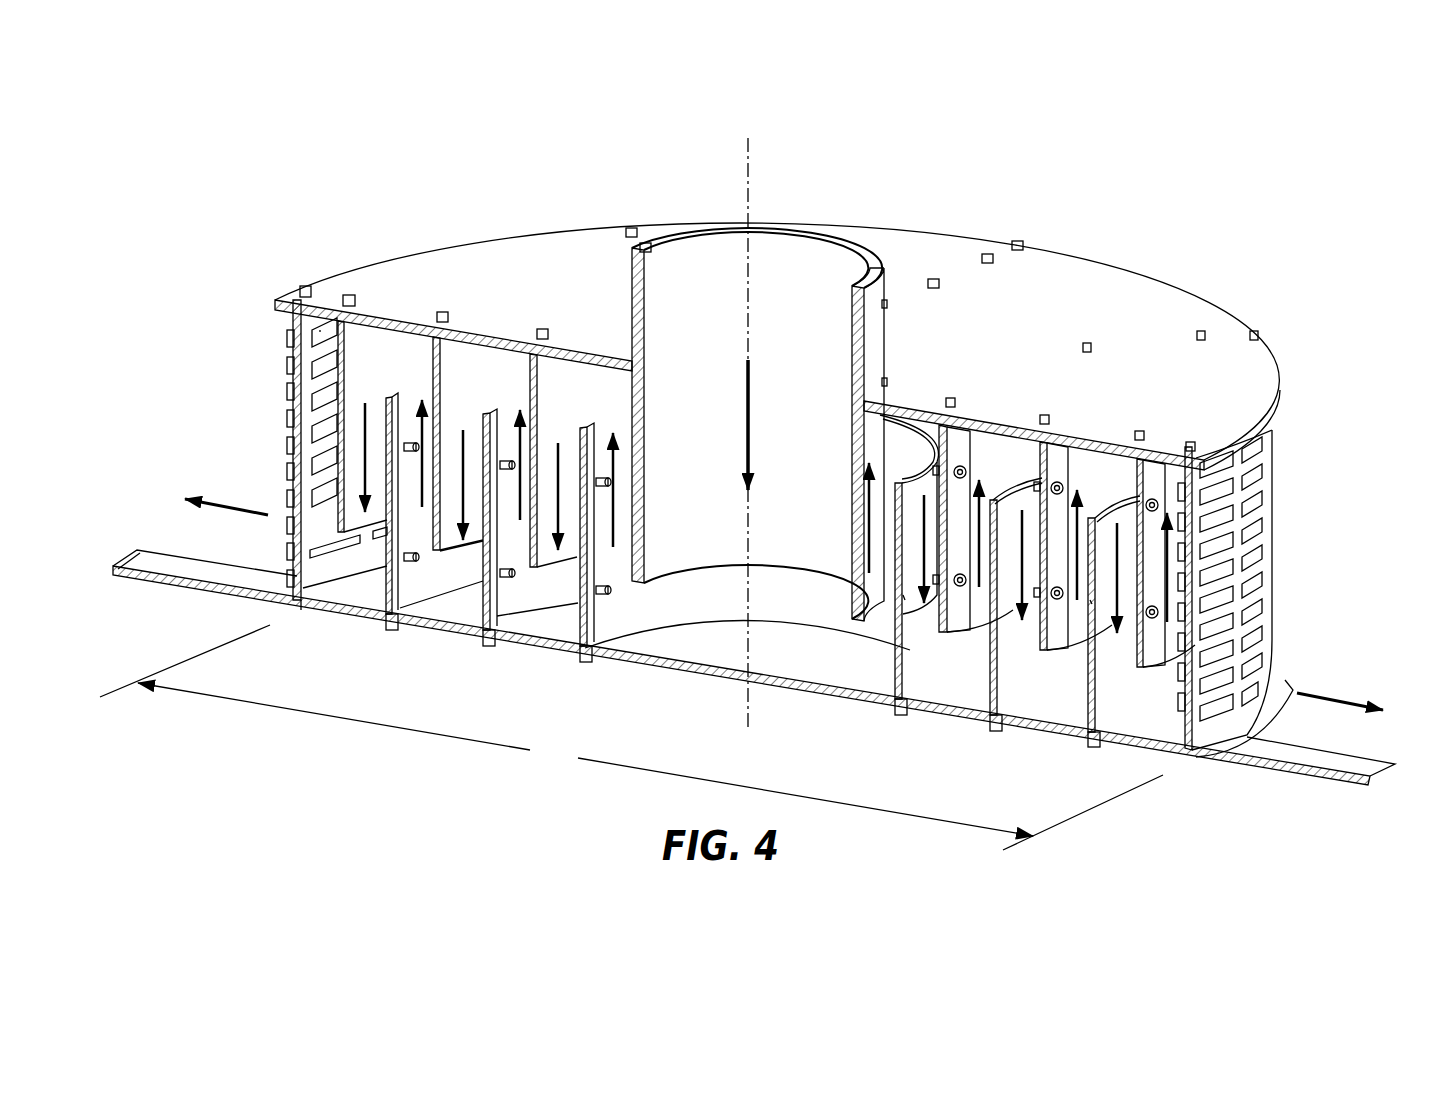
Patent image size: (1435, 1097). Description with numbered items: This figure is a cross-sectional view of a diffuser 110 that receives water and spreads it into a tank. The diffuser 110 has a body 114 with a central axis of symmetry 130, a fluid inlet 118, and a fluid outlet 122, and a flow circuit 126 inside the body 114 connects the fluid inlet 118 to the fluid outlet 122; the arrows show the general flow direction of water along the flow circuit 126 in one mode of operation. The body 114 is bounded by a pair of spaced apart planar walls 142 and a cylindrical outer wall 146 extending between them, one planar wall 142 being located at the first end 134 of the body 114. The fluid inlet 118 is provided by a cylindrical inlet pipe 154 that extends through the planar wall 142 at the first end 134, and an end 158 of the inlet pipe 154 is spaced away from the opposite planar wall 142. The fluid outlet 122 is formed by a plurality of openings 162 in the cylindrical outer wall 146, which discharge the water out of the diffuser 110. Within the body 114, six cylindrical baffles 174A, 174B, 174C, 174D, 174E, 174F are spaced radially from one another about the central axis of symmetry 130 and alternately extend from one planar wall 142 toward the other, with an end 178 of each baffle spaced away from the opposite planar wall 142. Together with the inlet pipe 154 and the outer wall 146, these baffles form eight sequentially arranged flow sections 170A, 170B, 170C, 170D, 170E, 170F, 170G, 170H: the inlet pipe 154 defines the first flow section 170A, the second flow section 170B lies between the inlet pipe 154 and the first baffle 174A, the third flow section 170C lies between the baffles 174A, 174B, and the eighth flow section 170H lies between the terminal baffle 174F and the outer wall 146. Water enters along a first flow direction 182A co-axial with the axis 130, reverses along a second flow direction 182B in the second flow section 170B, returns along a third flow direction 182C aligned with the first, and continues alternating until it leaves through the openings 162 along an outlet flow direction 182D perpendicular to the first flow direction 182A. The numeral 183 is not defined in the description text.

The diffuser 110 is at (1168, 196).
The body 114 is at (293, 393).
The fluid inlet 118 is at (756, 449).
The fluid outlet 122 is at (1283, 579).
The flow circuit 126 is at (982, 415).
The central axis of symmetry 130 is at (741, 186).
The first end 134 is at (345, 272).
The planar walls 142 is at (1233, 330).
The cylindrical outer wall 146 is at (1223, 587).
The cylindrical inlet pipe 154 is at (840, 240).
The end of the inlet pipe 158 is at (700, 567).
The openings 162 is at (313, 513).
The first flow section 170A is at (780, 423).
The second flow section 170B is at (612, 590).
The third flow section 170C is at (587, 380).
The fourth flow section 170D is at (512, 600).
The fifth flow section 170E is at (493, 366).
The sixth flow section 170F is at (422, 597).
The seventh flow section 170G is at (382, 355).
The eighth flow section 170H is at (313, 348).
The first cylindrical baffle 174A is at (925, 668).
The second cylindrical baffle 174B is at (983, 465).
The third cylindrical baffle 174C is at (1010, 690).
The fourth cylindrical baffle 174D is at (1067, 463).
The fifth cylindrical baffle 174E is at (385, 590).
The sixth cylindrical baffle 174F is at (1263, 425).
The end of cylindrical baffle 178 is at (457, 547).
The first flow direction 182A is at (750, 397).
The second flow direction 182B is at (900, 430).
The third flow direction 182C is at (903, 595).
The outlet flow direction 182D is at (217, 500).
The outlet bar 183 is at (302, 612).